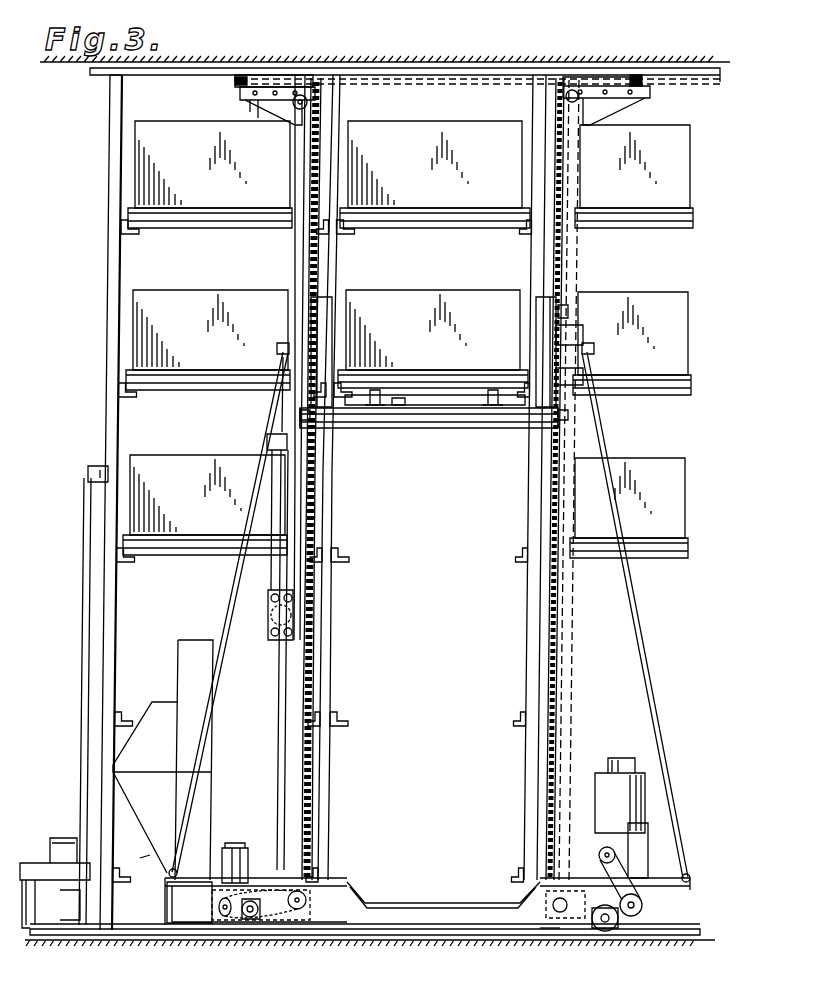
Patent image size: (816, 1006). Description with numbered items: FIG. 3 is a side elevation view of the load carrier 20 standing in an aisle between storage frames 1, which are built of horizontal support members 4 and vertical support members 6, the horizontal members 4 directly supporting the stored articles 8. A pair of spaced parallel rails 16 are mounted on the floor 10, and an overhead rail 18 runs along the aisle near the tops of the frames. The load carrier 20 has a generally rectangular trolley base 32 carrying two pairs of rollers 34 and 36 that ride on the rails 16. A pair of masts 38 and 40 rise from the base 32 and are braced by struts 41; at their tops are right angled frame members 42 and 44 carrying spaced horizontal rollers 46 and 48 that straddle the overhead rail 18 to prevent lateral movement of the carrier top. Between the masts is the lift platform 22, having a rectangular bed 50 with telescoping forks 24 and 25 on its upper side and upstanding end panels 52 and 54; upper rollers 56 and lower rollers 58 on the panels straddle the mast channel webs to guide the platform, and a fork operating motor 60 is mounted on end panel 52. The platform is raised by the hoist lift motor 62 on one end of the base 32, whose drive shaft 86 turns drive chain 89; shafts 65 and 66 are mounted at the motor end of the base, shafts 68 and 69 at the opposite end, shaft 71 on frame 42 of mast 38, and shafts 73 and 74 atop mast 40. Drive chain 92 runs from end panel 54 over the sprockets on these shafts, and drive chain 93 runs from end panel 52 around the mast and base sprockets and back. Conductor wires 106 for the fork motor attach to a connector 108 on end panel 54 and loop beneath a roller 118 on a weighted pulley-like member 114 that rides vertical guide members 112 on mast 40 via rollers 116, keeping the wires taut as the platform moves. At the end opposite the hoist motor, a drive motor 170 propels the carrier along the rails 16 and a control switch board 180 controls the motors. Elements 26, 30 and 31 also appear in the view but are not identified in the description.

The storage frame 1 is at (98, 263).
The horizontal support member 4 is at (130, 396).
The vertical support member 6 is at (109, 145).
The stored article 8 is at (190, 300).
The floor 10 is at (356, 942).
The parallel rail 16 is at (153, 937).
The overhead rail 18 is at (185, 76).
The load carrier 20 is at (284, 267).
The lift platform 22 is at (435, 444).
The fork 24 is at (470, 392).
The fork 25 is at (408, 397).
The guide 26 is at (25, 932).
The stop block 30 is at (40, 850).
The guide rail 31 is at (90, 470).
The trolley base 32 is at (405, 903).
The roller 34 is at (598, 932).
The roller 36 is at (250, 925).
The mast 38 is at (572, 503).
The mast 40 is at (280, 430).
The strut 41 is at (222, 612).
The right angled frame member 42 is at (588, 78).
The right angled frame member 44 is at (298, 78).
The horizontal roller 46 is at (636, 76).
The horizontal roller 48 is at (243, 75).
The bed 50 is at (488, 428).
The end panel 52 is at (545, 318).
The end panel 54 is at (327, 322).
The upper roller 56 is at (570, 310).
The lower roller 58 is at (300, 413).
The fork operating motor 60 is at (583, 333).
The hoist lift motor 62 is at (620, 760).
The shaft 65 is at (546, 903).
The shaft 66 is at (538, 934).
The shaft 68 is at (306, 903).
The shaft 69 is at (265, 922).
The shaft 71 is at (577, 103).
The shaft 73 is at (318, 104).
The shaft 74 is at (255, 105).
The drive shaft 86 is at (600, 858).
The drive chain 89 is at (630, 880).
The drive chain 92 is at (314, 626).
The drive chain 93 is at (545, 655).
The conductor wire 106 is at (270, 572).
The connector 108 is at (287, 446).
The vertical guide member 112 is at (279, 676).
The weighted pulley-like member 114 is at (272, 628).
The roller 116 is at (270, 598).
The roller 118 is at (270, 615).
The drive motor 170 is at (232, 846).
The control switch board 180 is at (167, 693).